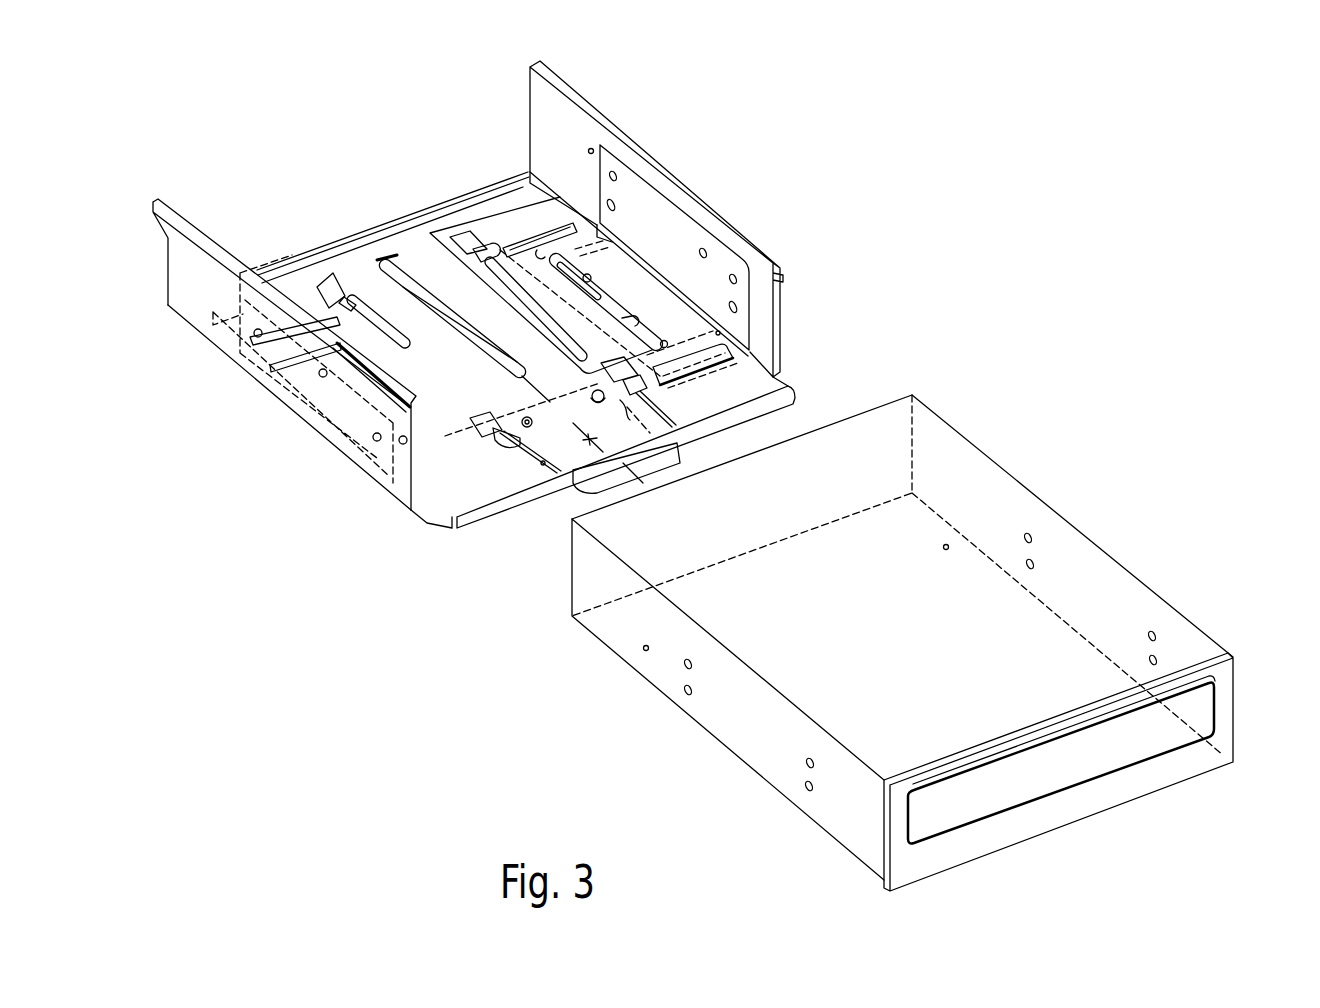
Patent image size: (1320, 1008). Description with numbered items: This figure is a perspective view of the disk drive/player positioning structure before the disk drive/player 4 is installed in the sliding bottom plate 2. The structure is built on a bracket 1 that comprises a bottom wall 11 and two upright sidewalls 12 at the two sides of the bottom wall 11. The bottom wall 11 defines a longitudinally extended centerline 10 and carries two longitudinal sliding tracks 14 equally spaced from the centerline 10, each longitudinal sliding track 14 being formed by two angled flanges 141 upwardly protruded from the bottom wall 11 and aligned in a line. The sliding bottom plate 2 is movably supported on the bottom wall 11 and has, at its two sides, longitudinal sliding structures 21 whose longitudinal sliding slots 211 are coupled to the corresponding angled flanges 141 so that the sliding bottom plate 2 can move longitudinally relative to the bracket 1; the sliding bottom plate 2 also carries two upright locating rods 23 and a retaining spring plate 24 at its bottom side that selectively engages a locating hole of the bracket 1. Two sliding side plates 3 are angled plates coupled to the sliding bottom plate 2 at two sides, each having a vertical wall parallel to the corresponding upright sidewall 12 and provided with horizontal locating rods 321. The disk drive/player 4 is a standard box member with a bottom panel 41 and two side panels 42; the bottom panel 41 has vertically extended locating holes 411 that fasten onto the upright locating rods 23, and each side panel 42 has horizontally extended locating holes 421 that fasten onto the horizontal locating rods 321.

The bracket 1 is at (511, 184).
The centerline 10 is at (368, 236).
The bottom wall 11 is at (457, 215).
The upright sidewall 12 is at (187, 217).
The sliding bottom plate 2 is at (412, 250).
The longitudinal sliding structure 21 is at (333, 288).
The longitudinal sliding slot 211 is at (347, 304).
The upright locating rod 23 is at (598, 236).
The sliding side plate 3 is at (664, 222).
The horizontal locating rod 321 is at (611, 205).
The longitudinal sliding track 14 is at (503, 438).
The angled flange 141 is at (527, 450).
The retaining spring plate 24 is at (578, 483).
The disk drive/player 4 is at (1080, 541).
The bottom panel 41 is at (718, 743).
The vertically extended locating hole 411 is at (944, 548).
The horizontally extended locating hole 421 is at (1031, 566).
The side panel 42 is at (1206, 640).